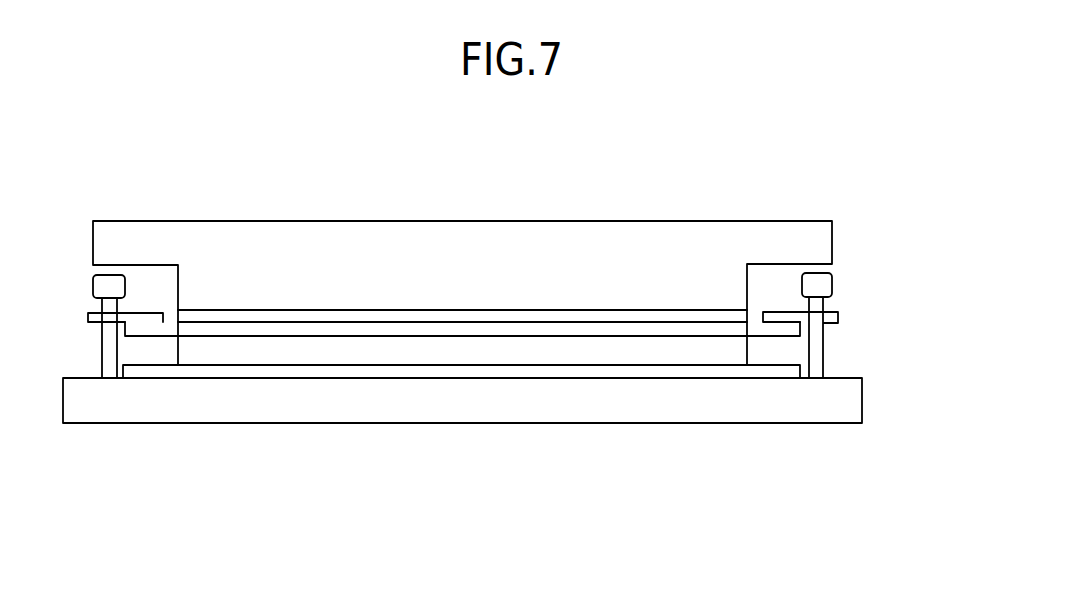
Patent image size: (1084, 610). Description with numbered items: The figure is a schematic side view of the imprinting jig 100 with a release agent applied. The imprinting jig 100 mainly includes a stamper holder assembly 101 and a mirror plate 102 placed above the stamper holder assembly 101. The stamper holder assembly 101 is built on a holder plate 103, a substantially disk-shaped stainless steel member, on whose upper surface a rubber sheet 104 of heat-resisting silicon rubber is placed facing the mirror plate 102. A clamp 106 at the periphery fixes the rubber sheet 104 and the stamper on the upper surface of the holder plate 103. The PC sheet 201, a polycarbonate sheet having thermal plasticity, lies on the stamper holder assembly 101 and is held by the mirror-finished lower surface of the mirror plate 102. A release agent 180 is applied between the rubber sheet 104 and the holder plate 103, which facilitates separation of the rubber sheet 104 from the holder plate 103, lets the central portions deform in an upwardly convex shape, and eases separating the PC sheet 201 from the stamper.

The imprinting jig 100 is at (762, 178).
The stamper holder assembly 101 is at (342, 445).
The mirror plate 102 is at (582, 238).
The holder plate 103 is at (595, 395).
The rubber sheet 104 is at (678, 347).
The clamp 106 is at (825, 282).
The release agent 180 is at (768, 370).
The plastic sheet having thermal plasticity (PC sheet) 201 is at (730, 315).